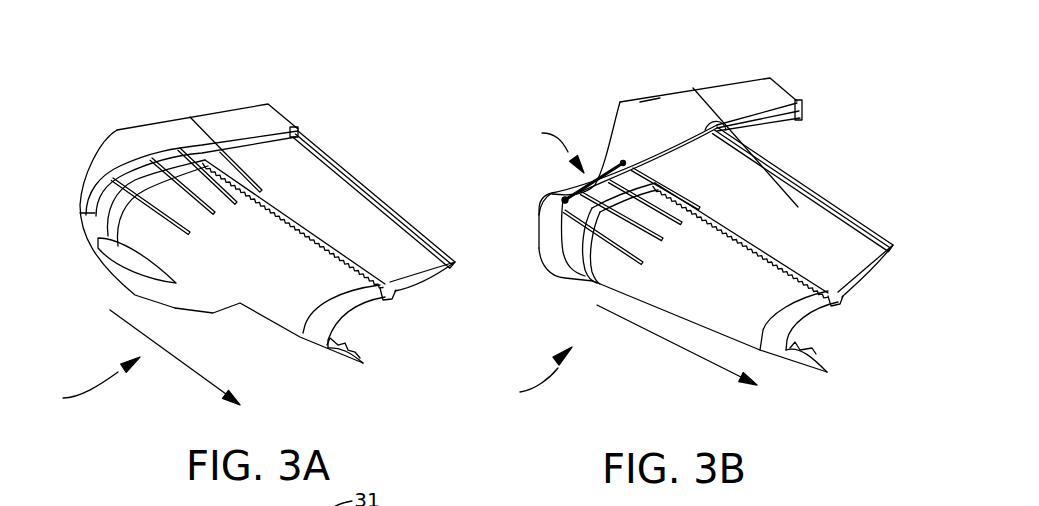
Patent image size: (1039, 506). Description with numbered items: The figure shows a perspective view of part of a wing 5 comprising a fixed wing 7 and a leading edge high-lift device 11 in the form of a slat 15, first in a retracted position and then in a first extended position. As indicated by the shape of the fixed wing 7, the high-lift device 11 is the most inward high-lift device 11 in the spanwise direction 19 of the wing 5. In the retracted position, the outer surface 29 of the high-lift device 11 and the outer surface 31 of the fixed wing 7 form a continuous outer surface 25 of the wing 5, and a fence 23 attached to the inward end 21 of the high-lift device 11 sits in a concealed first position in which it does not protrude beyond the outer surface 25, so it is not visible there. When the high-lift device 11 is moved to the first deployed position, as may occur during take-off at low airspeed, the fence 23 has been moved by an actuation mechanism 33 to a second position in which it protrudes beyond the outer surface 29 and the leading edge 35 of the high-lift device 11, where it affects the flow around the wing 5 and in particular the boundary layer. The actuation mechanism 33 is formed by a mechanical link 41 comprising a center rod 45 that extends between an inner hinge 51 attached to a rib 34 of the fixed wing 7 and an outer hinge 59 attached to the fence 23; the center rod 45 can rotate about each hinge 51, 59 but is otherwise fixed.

In FIG. 3A, the wing 5 is at (93, 384).
In FIG. 3B, the wing 5 is at (536, 376).
In FIG. 3A, the fixed wing 7 is at (253, 117).
In FIG. 3B, the fixed wing 7 is at (642, 110).
In FIG. 3A, the leading edge high-lift device 11 is at (342, 208).
In FIG. 3B, the leading edge high-lift device 11 is at (790, 210).
In FIG. 3A, the slat 15 is at (270, 247).
In FIG. 3B, the slat 15 is at (716, 248).
In FIG. 3A, the spanwise direction 19 is at (178, 362).
In FIG. 3B, the spanwise direction 19 is at (673, 343).
In FIG. 3A, the inward end 21 is at (162, 162).
In FIG. 3B, the inward end 21 is at (595, 185).
In FIG. 3B, the fence 23 is at (537, 243).
In FIG. 3A, the outer surface of the wing 25 is at (290, 170).
In FIG. 3B, the outer surface of the wing 25 is at (743, 187).
In FIG. 3A, the outer surface of the high-lift device 29 is at (407, 253).
In FIG. 3B, the outer surface of the high-lift device 29 is at (850, 247).
In FIG. 3A, the outer surface of the fixed wing 31 is at (164, 130).
In FIG. 3B, the outer surface of the fixed wing 31 is at (744, 88).
In FIG. 3B, the actuation mechanism 33 is at (566, 196).
In FIG. 3B, the rib 34 is at (693, 128).
In FIG. 3B, the leading edge 35 is at (603, 263).
In FIG. 3B, the mechanical link 41 is at (565, 200).
In FIG. 3B, the center rod 45 is at (549, 147).
In FIG. 3B, the inner hinge 51 is at (612, 180).
In FIG. 3B, the outer hinge 59 is at (552, 200).